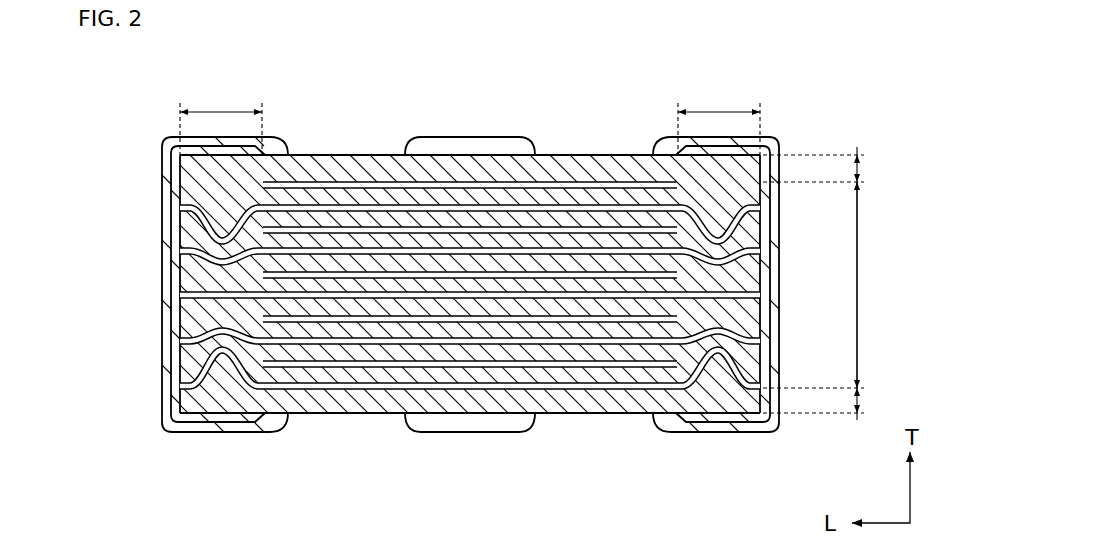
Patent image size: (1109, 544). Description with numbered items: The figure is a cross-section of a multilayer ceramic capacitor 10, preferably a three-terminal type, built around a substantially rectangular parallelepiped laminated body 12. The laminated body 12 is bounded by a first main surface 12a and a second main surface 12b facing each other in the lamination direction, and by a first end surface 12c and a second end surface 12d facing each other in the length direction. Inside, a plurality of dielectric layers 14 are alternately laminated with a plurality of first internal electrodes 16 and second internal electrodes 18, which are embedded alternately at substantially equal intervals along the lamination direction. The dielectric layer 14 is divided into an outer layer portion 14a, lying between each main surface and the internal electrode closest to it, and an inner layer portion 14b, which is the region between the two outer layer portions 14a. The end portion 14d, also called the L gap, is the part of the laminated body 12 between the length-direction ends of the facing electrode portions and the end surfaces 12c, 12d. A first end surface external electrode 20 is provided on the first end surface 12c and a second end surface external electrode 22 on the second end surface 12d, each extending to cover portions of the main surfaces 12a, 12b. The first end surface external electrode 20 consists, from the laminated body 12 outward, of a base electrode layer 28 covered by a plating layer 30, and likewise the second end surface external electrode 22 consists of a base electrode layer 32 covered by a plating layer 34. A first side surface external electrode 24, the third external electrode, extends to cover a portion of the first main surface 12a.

The multilayer ceramic capacitor 10 is at (816, 96).
The laminated body 12 is at (604, 148).
The first main surface 12a is at (306, 155).
The second main surface 12b is at (315, 413).
The first end surface 12c is at (170, 229).
The second end surface 12d is at (771, 231).
The dielectric layer 14 is at (408, 217).
The outer layer portion 14a is at (835, 283).
The inner layer portion 14b is at (882, 285).
The end portion 14d is at (470, 116).
The first internal electrode 16 is at (352, 389).
The second internal electrode 18 is at (553, 368).
The first end surface external electrode 20 is at (152, 486).
The second end surface external electrode 22 is at (787, 486).
The first side surface external electrode 24 is at (521, 458).
The base electrode layer 28 is at (230, 421).
The plating layer 30 is at (184, 432).
The base electrode layer 32 is at (712, 426).
The plating layer 34 is at (755, 432).